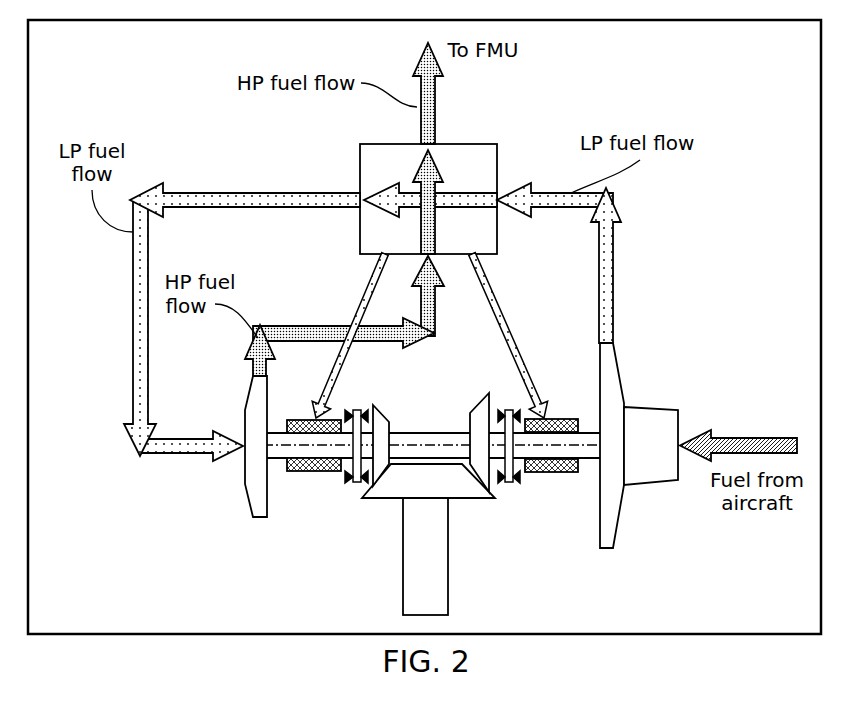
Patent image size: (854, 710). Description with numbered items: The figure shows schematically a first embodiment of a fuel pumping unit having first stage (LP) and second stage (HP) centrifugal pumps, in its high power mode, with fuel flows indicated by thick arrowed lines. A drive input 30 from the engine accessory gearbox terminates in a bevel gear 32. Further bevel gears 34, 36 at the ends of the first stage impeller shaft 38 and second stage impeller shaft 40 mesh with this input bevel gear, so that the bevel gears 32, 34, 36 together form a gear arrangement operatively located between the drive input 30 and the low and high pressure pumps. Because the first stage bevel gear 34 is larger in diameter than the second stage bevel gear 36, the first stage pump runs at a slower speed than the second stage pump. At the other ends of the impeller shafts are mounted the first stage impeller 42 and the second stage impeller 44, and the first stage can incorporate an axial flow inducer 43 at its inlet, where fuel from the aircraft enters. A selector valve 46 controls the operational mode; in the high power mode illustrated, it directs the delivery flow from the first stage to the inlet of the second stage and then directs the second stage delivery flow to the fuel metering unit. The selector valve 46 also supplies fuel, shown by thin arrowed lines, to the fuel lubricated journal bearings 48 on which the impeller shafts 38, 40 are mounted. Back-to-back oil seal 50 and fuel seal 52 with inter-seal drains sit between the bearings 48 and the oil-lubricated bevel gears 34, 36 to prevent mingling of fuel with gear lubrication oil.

The drive input 30 is at (449, 572).
The bevel gear 32 is at (482, 469).
The first stage bevel gear 34 is at (479, 426).
The second stage bevel gear 36 is at (381, 426).
The first stage impeller shaft 38 is at (578, 450).
The second stage impeller shaft 40 is at (292, 458).
The first stage impeller 42 is at (612, 500).
The axial flow inducer 43 is at (650, 433).
The second stage impeller 44 is at (252, 459).
The selector valve 46 is at (497, 157).
The fuel lubricated journal bearings 48 is at (541, 416).
The oil seal 50 is at (360, 483).
The fuel seal 52 is at (340, 486).